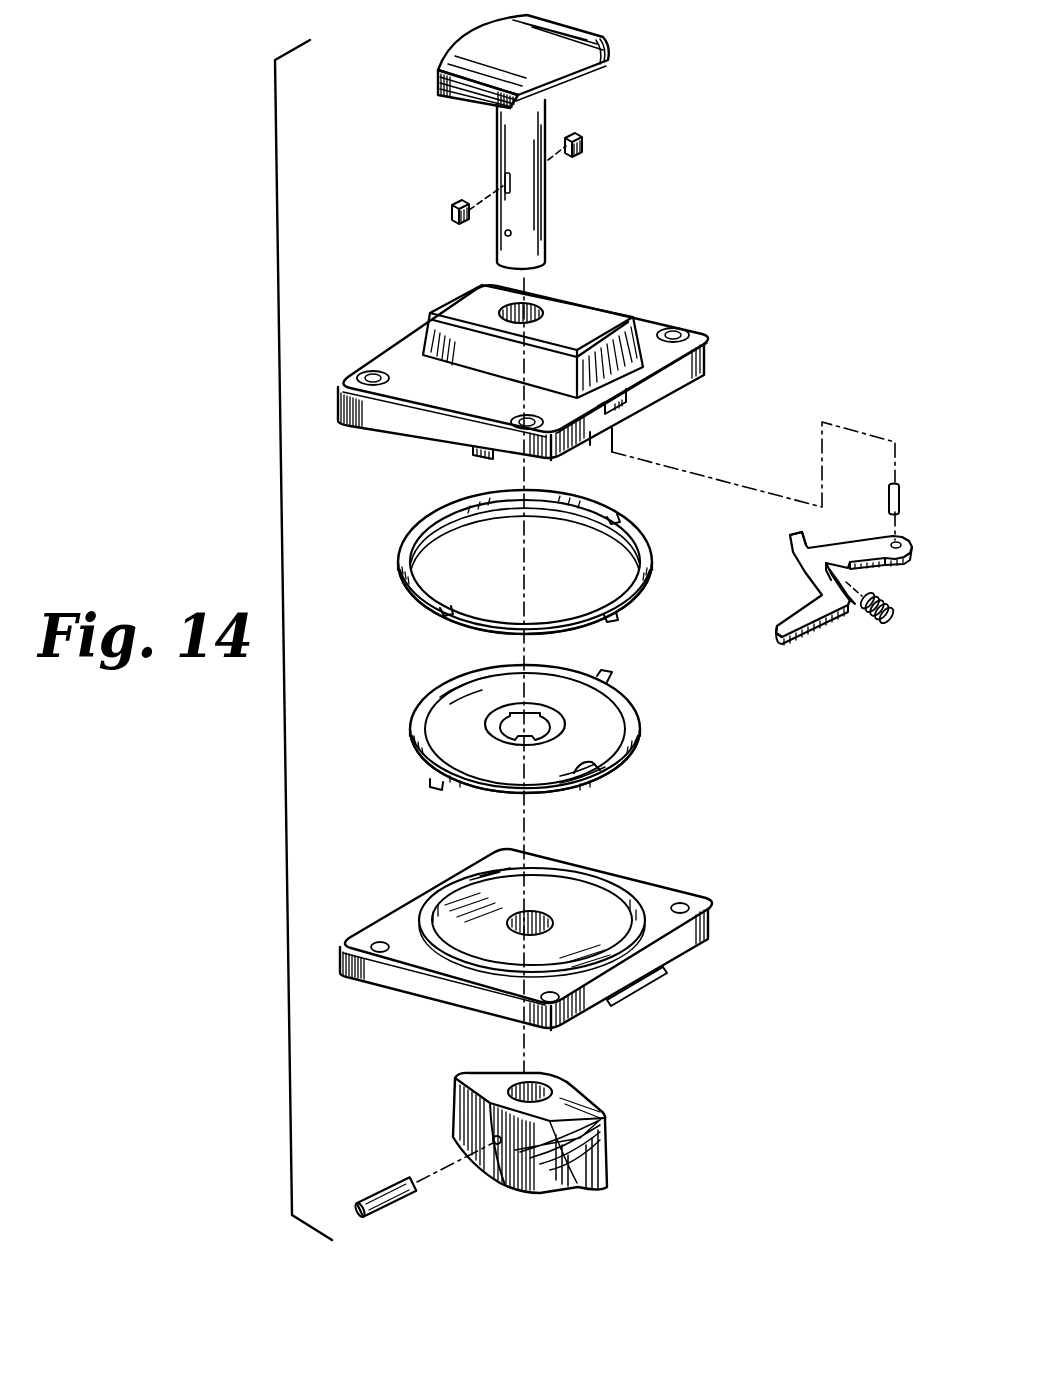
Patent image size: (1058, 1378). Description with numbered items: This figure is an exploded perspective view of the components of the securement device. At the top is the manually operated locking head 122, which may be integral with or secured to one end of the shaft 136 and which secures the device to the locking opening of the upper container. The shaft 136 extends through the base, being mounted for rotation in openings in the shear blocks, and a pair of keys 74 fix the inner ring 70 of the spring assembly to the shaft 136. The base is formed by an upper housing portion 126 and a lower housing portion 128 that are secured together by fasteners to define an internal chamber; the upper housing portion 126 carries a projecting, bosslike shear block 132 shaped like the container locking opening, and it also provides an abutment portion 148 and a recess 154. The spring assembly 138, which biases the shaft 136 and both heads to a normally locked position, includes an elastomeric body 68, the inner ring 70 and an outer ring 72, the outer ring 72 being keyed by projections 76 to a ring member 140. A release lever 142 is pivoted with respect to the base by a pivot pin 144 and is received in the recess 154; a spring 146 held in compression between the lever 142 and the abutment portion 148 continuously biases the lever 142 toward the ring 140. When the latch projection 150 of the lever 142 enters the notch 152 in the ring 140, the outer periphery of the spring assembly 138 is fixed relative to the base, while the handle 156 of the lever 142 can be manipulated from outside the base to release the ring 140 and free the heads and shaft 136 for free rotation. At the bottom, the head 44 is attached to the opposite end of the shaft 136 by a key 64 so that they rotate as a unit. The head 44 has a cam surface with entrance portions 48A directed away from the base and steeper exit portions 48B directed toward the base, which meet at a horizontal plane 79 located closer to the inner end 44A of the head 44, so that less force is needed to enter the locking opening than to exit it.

The locking head 122 is at (606, 38).
The keys 74 is at (585, 140).
The shaft 136 is at (525, 207).
The shear block 132 is at (582, 330).
The upper housing portion 126 is at (400, 360).
The abutment portion 148 is at (607, 428).
The recess 154 is at (495, 452).
The pivot pin 144 is at (902, 494).
The latch projection 150 is at (797, 534).
The ring member 140 is at (494, 580).
The release lever 142 is at (803, 582).
The handle 156 is at (790, 630).
The notch 152 is at (612, 622).
The spring 146 is at (893, 612).
The inner ring 70 is at (497, 717).
The projections 76 is at (612, 678).
The outer ring 72 is at (518, 747).
The spring assembly 138 is at (664, 748).
The elastomeric body 68 is at (590, 764).
The lower housing portion 128 is at (677, 937).
The head 44 is at (540, 1156).
The inner end of head 44A is at (582, 1098).
The exit portions of cam surface 48B is at (587, 1137).
The entrance portions of cam surface 48A is at (577, 1183).
The horizontal plane 79 is at (533, 1165).
The key 64 is at (375, 1197).